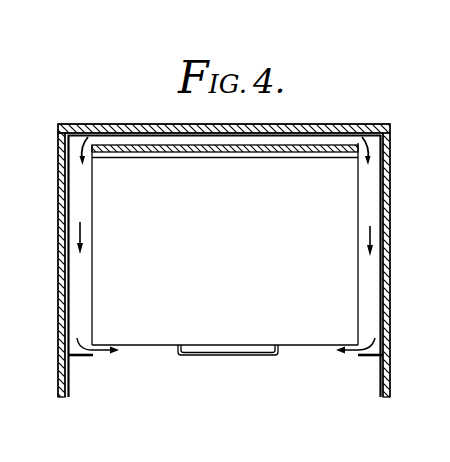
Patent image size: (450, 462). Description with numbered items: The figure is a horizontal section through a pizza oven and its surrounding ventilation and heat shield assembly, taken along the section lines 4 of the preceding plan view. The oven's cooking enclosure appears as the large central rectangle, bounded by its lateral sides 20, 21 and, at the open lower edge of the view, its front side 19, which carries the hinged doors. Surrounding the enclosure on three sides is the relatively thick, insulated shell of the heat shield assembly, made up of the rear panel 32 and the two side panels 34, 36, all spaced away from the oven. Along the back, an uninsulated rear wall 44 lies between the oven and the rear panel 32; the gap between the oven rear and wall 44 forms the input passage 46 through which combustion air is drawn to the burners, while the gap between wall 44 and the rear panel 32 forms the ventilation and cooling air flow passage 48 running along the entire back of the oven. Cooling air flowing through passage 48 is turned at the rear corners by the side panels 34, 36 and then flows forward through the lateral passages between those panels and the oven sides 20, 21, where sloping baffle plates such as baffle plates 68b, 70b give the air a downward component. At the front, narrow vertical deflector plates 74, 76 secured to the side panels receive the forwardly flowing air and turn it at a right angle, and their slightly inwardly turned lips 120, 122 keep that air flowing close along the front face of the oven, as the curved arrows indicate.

The section lines 4 is at (17, 181).
The front side 19 is at (153, 347).
The lateral side 20 is at (91, 195).
The lateral side 21 is at (360, 206).
The rear panel 32 is at (168, 127).
The side panel 34 is at (59, 225).
The side panel 36 is at (389, 307).
The rear wall 44 is at (218, 148).
The input passage 46 is at (263, 159).
The ventilation and cooling air flow passage 48 is at (258, 128).
The baffle plate 68b is at (82, 277).
The baffle plate 70b is at (374, 284).
The deflector plate 74 is at (88, 358).
The deflector plate 76 is at (372, 359).
The inwardly turned lip 120 is at (93, 355).
The inwardly turned lip 122 is at (359, 355).